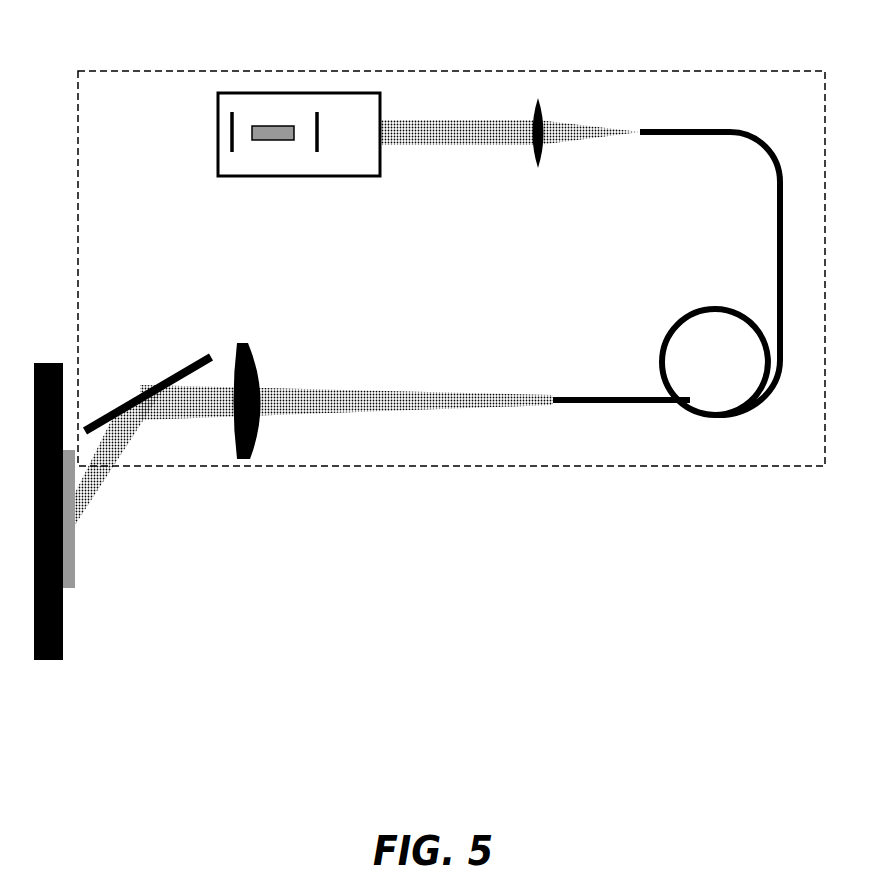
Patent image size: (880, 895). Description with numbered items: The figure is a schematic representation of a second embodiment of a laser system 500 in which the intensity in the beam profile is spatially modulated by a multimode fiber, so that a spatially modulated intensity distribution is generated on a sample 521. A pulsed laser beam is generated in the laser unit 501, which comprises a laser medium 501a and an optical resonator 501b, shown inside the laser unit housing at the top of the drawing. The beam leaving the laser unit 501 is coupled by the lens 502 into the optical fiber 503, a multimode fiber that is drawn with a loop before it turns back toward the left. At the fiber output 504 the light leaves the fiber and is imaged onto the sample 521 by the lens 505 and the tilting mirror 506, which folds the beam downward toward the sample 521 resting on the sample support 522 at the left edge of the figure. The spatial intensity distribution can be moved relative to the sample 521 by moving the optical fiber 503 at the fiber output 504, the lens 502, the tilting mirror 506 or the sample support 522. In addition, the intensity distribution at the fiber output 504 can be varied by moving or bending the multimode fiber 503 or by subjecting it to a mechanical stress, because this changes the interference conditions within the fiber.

The laser system 500 is at (470, 466).
The laser unit 501 is at (363, 185).
The laser medium 501a is at (273, 146).
The optical resonator 501b is at (240, 118).
The lens 502 is at (538, 180).
The optical fiber 503 is at (700, 147).
The fiber output 504 is at (555, 392).
The lens 505 is at (243, 340).
The tilting mirror 506 is at (141, 372).
The sample 521 is at (84, 573).
The sample support 522 is at (66, 657).